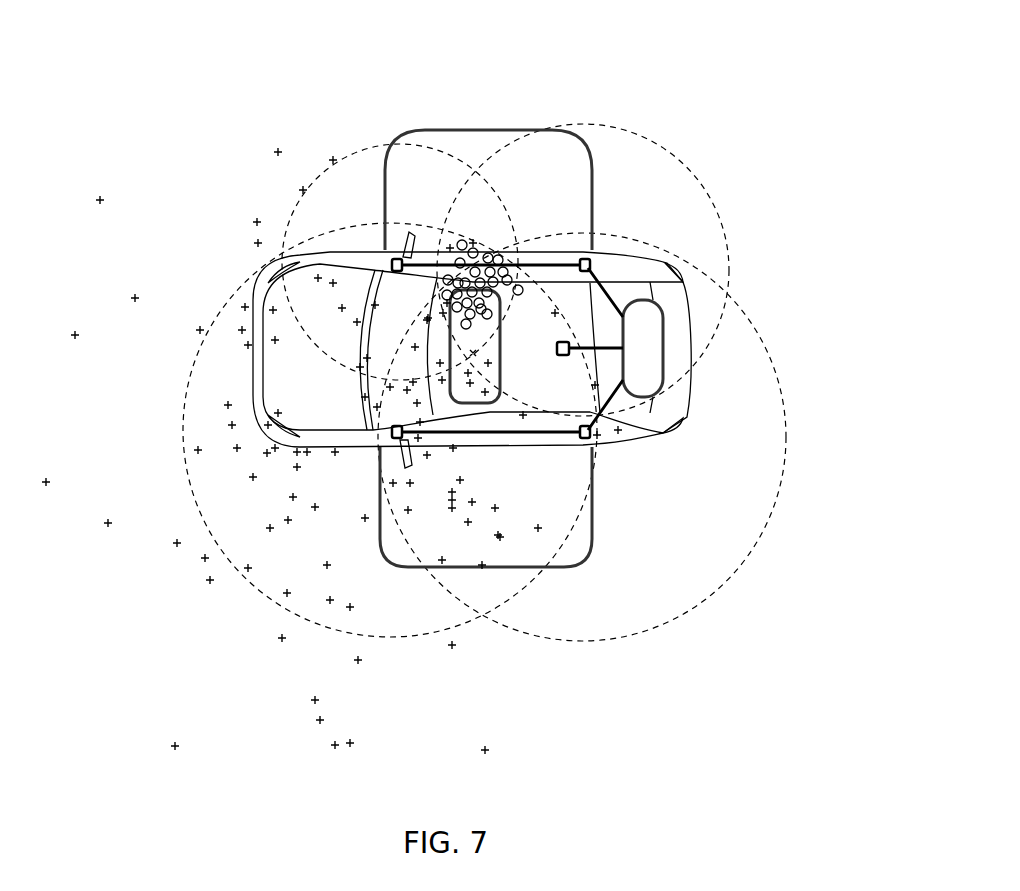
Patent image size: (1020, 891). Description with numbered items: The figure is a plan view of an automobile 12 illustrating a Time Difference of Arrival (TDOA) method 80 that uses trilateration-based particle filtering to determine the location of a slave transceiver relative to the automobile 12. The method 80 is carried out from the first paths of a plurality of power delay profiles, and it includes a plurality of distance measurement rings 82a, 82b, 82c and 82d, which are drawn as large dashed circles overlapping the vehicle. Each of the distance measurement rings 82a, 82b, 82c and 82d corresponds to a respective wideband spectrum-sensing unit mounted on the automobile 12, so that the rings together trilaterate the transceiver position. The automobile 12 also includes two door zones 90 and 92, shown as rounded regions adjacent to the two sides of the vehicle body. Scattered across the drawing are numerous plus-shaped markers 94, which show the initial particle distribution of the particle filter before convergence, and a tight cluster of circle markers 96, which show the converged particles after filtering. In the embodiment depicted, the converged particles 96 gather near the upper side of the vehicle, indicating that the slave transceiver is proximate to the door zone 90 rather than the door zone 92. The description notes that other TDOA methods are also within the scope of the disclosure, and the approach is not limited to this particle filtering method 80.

The automobile 12 is at (253, 382).
The TDOA method 80 is at (718, 52).
The distance measurement ring 82a is at (365, 150).
The distance measurement ring 82b is at (242, 288).
The distance measurement ring 82c is at (668, 155).
The distance measurement ring 82d is at (777, 390).
The door zone 90 is at (468, 132).
The door zone 92 is at (497, 570).
The "+" markers 94 is at (273, 155).
The "o" markers 96 is at (458, 243).